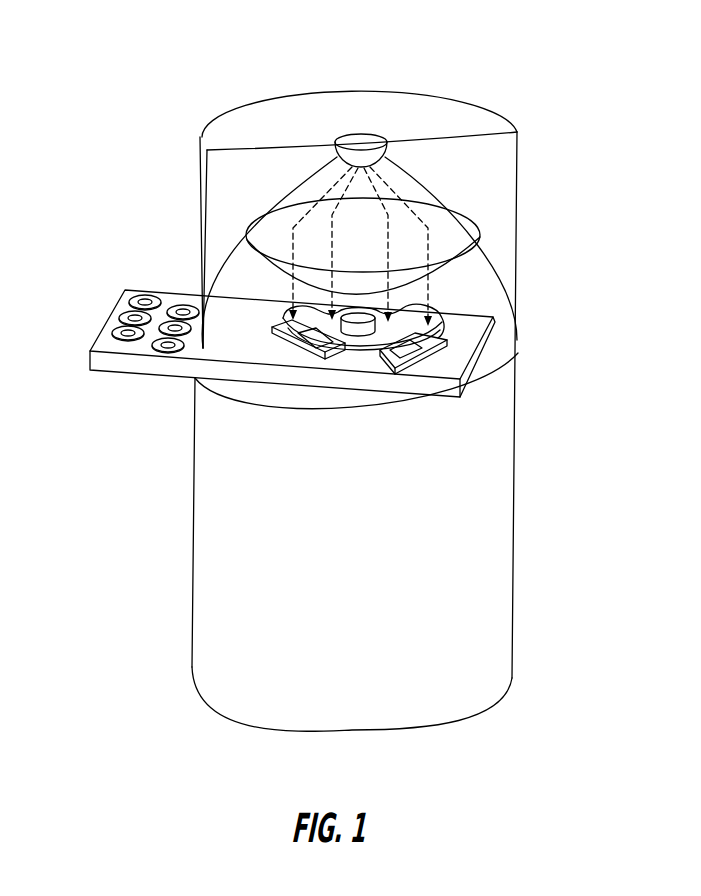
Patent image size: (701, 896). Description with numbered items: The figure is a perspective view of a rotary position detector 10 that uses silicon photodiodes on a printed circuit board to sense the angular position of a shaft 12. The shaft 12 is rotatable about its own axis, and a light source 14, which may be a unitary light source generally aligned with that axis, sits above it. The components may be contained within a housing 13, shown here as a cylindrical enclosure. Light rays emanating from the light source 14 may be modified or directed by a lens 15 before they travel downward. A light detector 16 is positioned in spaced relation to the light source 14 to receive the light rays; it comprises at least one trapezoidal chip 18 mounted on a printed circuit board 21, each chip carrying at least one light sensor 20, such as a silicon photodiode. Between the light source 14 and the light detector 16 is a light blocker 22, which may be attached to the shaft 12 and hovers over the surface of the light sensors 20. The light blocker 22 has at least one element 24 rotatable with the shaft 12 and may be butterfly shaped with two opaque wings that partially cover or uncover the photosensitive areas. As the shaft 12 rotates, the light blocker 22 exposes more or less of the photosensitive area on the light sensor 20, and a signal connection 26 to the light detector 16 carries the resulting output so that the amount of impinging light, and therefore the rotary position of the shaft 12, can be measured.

The rotary position detector 10 is at (136, 97).
The shaft 12 is at (340, 301).
The housing 13 is at (492, 562).
The light source 14 is at (363, 142).
The lens 15 is at (460, 240).
The light detector 16 is at (461, 340).
The trapezoidal chip 18 is at (425, 335).
The light sensor 20 is at (307, 300).
The printed circuit board 21 is at (103, 349).
The light blocker 22 is at (409, 327).
The element 24 is at (290, 298).
The signal connection 26 is at (128, 292).